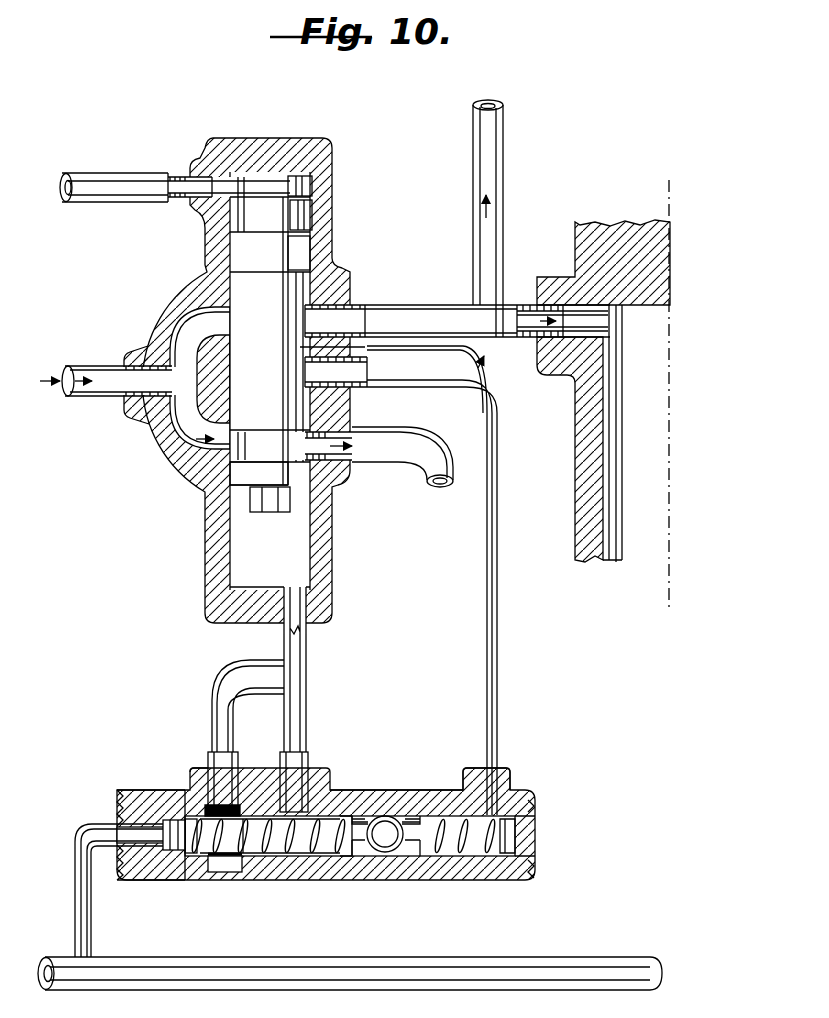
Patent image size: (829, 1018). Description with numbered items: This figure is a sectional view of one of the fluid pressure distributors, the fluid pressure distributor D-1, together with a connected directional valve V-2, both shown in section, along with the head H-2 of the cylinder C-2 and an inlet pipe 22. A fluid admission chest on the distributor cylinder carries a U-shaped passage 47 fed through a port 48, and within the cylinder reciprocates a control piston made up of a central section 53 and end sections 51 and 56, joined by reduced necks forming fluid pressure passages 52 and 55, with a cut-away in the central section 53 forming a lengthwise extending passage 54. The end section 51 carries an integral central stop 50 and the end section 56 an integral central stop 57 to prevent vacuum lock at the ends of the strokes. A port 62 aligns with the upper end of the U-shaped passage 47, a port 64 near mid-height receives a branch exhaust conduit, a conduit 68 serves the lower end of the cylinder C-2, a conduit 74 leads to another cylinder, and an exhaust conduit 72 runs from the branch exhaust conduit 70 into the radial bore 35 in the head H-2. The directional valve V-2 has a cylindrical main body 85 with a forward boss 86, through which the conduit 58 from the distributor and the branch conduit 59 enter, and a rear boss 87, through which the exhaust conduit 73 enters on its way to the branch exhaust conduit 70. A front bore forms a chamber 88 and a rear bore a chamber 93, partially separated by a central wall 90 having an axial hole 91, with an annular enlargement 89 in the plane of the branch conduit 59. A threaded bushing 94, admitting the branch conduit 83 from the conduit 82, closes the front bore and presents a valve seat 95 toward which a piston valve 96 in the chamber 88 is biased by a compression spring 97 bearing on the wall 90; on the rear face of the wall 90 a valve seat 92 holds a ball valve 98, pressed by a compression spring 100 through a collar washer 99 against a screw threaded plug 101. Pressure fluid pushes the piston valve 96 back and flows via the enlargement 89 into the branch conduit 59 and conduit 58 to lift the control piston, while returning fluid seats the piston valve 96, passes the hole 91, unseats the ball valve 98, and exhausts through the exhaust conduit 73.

The fluid pressure distributor D-1 is at (216, 246).
The head H-2 is at (576, 251).
The cylinder C-2 is at (578, 450).
The directional valve V-2 is at (350, 880).
The inlet pipe 22 is at (88, 374).
The radial bore 35 is at (598, 325).
The U-shaped passage 47 is at (193, 333).
The port 48 is at (147, 383).
The integral central stop 50 is at (265, 506).
The end section 51 is at (240, 484).
The fluid pressure passage 52 is at (184, 470).
The central section 53 is at (270, 331).
The lengthwise extending passage 54 is at (312, 348).
The fluid pressure passage 55 is at (306, 256).
The end section 56 is at (308, 220).
The integral central stop 57 is at (302, 186).
The conduit 58 is at (299, 699).
The branch conduit 59 is at (213, 710).
The port 62 is at (350, 308).
The port 64 is at (347, 386).
The conduit 68 is at (390, 450).
The branch exhaust conduit 70 is at (491, 178).
The exhaust conduit 72 is at (423, 318).
The exhaust conduit 73 is at (497, 605).
The conduit 74 is at (107, 193).
The conduit 82 is at (277, 984).
The branch conduit 83 is at (73, 857).
The main body 85 is at (393, 800).
The forward boss 86 is at (194, 782).
The rear boss 87 is at (508, 778).
The chamber 88 is at (310, 854).
The annular enlargement 89 is at (224, 867).
The central wall 90 is at (363, 856).
The axial hole 91 is at (354, 814).
The valve seat 92 is at (364, 810).
The chamber 93 is at (452, 857).
The threaded bushing 94 is at (117, 812).
The valve seat 95 is at (178, 855).
The piston valve 96 is at (246, 804).
The compression spring 97 is at (245, 850).
The ball valve 98 is at (393, 851).
The collar washer 99 is at (420, 814).
The compression spring 100 is at (478, 856).
The screw threaded plug 101 is at (534, 853).